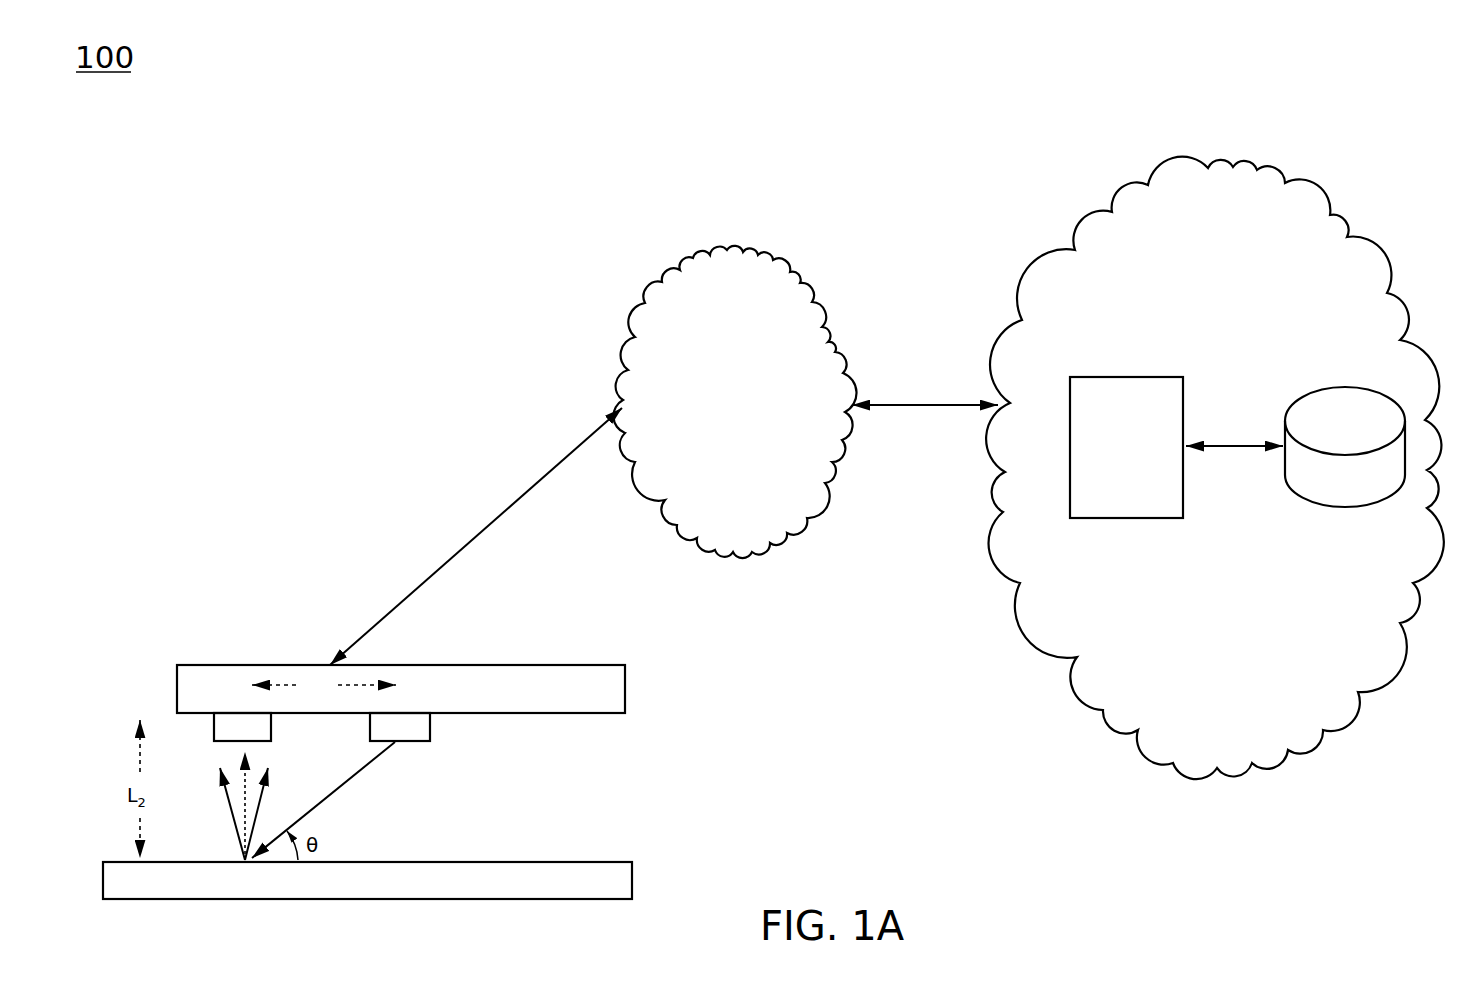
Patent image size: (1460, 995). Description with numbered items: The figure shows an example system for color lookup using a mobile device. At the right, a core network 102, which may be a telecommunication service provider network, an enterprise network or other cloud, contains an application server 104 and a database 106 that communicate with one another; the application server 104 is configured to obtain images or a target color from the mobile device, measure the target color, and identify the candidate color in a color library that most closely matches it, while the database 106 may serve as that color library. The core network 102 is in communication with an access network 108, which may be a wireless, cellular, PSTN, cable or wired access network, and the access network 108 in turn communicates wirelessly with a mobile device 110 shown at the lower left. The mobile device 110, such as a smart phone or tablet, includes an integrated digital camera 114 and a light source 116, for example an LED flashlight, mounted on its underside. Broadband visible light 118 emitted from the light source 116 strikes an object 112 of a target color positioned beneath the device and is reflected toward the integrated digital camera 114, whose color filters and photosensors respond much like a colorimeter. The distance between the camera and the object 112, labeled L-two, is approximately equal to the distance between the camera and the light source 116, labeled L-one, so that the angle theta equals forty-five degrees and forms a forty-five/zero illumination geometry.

The core network 102 is at (1215, 468).
The application server 104 is at (1126, 447).
The database 106 is at (1345, 447).
The access network 108 is at (734, 402).
The mobile device 110 is at (256, 664).
The object 112 is at (598, 900).
The integrated digital camera 114 is at (214, 727).
The light source 116 is at (432, 722).
The broadband visible light 118 is at (372, 771).